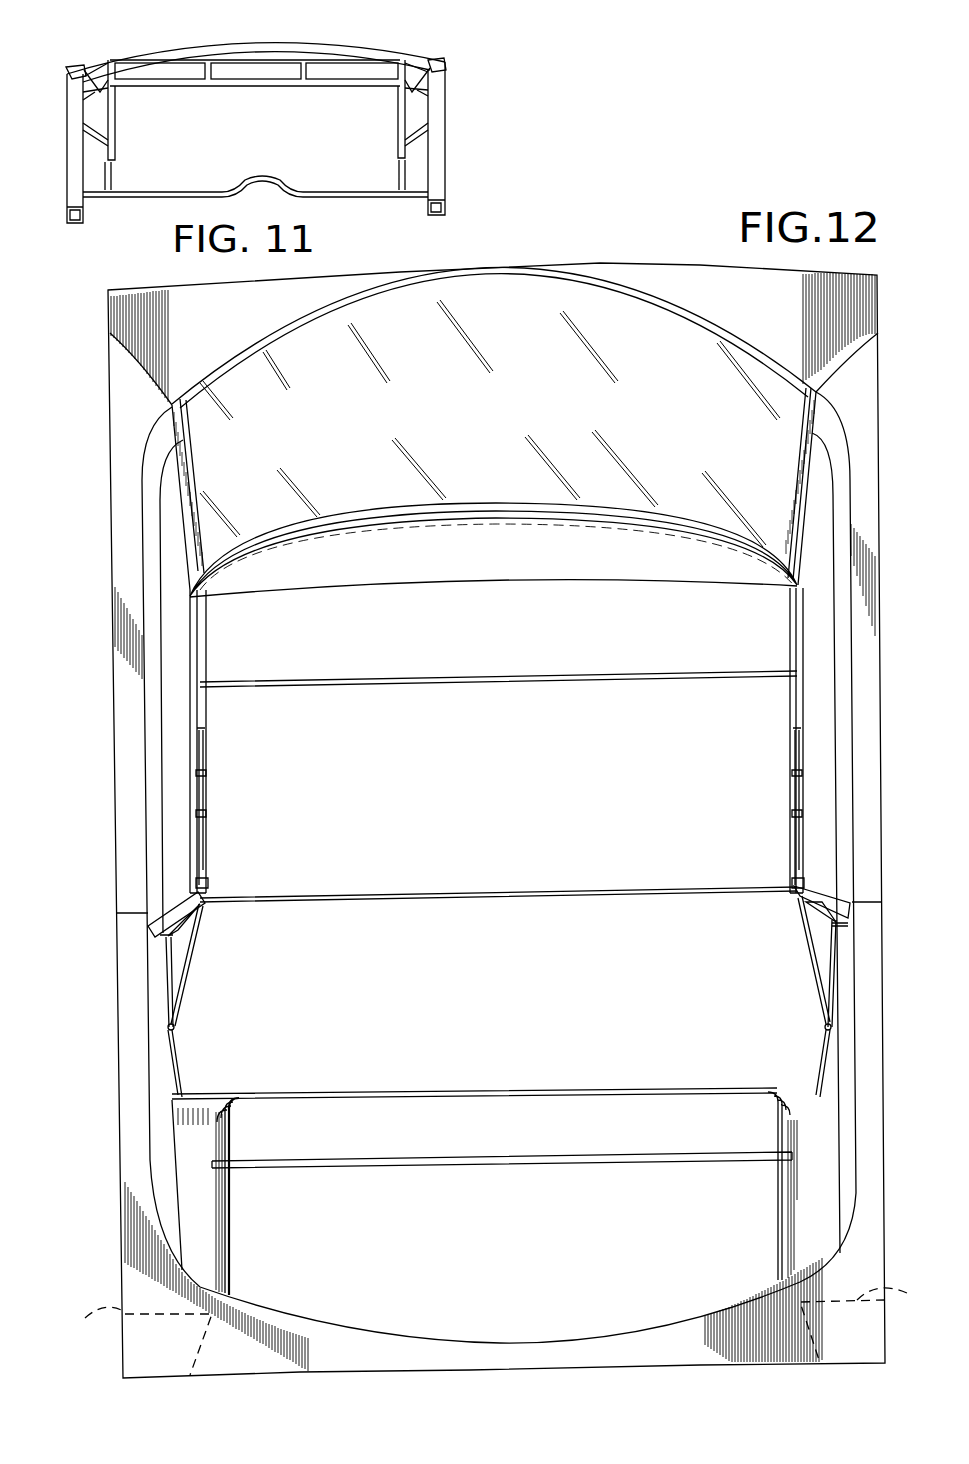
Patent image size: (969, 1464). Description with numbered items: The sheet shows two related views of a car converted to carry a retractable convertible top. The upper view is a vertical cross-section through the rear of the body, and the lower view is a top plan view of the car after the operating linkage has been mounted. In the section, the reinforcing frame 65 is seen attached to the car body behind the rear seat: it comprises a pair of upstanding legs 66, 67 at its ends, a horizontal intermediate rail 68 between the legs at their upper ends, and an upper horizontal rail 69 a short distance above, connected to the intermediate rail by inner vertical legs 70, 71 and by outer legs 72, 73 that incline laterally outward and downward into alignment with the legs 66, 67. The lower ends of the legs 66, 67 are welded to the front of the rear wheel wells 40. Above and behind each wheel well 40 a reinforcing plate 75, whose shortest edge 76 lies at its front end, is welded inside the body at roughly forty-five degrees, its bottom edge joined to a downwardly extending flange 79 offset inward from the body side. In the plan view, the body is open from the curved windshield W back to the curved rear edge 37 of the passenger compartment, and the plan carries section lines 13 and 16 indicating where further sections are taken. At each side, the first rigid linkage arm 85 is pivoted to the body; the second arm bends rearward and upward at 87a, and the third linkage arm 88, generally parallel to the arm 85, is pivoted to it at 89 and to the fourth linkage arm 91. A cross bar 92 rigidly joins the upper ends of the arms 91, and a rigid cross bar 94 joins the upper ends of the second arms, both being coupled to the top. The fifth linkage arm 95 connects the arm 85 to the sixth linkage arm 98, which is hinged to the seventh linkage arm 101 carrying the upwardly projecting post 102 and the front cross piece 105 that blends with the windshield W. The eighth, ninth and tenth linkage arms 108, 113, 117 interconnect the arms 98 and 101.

In FIG. 12, the windshield W is at (720, 345).
In FIG. 12, the section line 13- 13 is at (447, 250).
In FIG. 12, the section line 16- 16 is at (87, 884).
In FIG. 12, the curved rear edge 37 is at (467, 1338).
In FIG. 11, the rear wheel wells 40 is at (112, 180).
In FIG. 12, the rear wheel wells 40 is at (233, 1212).
In FIG. 11, the reinforcing frame 65 is at (228, 40).
In FIG. 12, the reinforcing frame 65 is at (456, 1167).
In FIG. 11, the upstanding leg 66 is at (112, 112).
In FIG. 11, the upstanding leg 67 is at (400, 115).
In FIG. 11, the horizontal intermediate rail 68 is at (255, 86).
In FIG. 11, the upper horizontal rail 69 is at (262, 60).
In FIG. 11, the inner vertical leg 70 is at (205, 70).
In FIG. 11, the inner vertical leg 71 is at (302, 65).
In FIG. 11, the outer leg 72 is at (110, 62).
In FIG. 11, the outer leg 73 is at (392, 62).
In FIG. 11, the reinforcing plate 75 is at (255, 118).
In FIG. 12, the reinforcing plate 75 is at (497, 1331).
In FIG. 11, the shortest edge 76 is at (90, 66).
In FIG. 11, the downwardly extending flange 79 is at (68, 72).
In FIG. 12, the first rigid linkage arm 85 is at (167, 979).
In FIG. 12, the bent portion of second linkage arm 87a is at (180, 1062).
In FIG. 12, the third linkage arm 88 is at (192, 960).
In FIG. 12, the pivotal connection 89 is at (175, 1025).
In FIG. 12, the fourth linkage arm 91 is at (180, 898).
In FIG. 12, the cross bar 92 is at (480, 893).
In FIG. 12, the rigid cross bar 94 is at (494, 1092).
In FIG. 12, the fifth linkage arm 95 is at (185, 922).
In FIG. 12, the sixth linkage arm 98 is at (206, 846).
In FIG. 12, the seventh linkage arm 101 is at (204, 648).
In FIG. 12, the upwardly projecting post 102 is at (481, 680).
In FIG. 12, the front cross piece 105 is at (548, 570).
In FIG. 12, the eighth linkage arm 108 is at (207, 868).
In FIG. 12, the ninth linkage arm 113 is at (206, 787).
In FIG. 12, the tenth linkage arm 117 is at (205, 748).